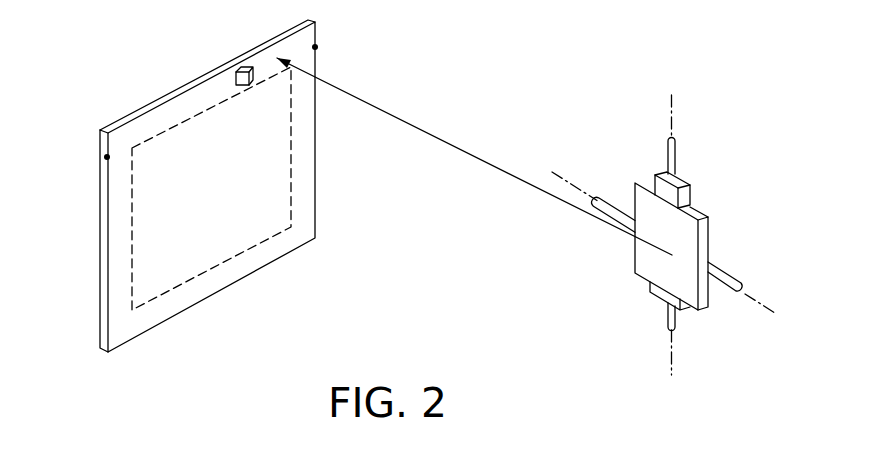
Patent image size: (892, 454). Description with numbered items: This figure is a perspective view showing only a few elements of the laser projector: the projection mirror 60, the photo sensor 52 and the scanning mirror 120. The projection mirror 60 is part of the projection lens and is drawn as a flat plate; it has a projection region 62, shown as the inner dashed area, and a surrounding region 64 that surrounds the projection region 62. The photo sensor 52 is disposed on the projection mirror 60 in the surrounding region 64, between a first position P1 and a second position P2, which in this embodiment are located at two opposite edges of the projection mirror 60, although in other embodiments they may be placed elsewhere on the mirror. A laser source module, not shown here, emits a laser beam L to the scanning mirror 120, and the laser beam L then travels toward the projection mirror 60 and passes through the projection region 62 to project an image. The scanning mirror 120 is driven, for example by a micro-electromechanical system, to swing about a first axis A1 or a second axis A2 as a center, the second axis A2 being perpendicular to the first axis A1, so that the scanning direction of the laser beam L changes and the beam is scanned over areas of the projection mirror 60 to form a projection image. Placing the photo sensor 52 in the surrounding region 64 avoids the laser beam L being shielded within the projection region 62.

The projection mirror 60 is at (60, 232).
The projection region 62 is at (143, 173).
The surrounding region 64 is at (125, 277).
The photo sensor 52 is at (241, 72).
The first position P1 is at (106, 157).
The second position P2 is at (316, 47).
The laser beam L is at (460, 147).
The scanning mirror 120 is at (682, 233).
The first axis A1 is at (673, 103).
The second axis A2 is at (768, 305).